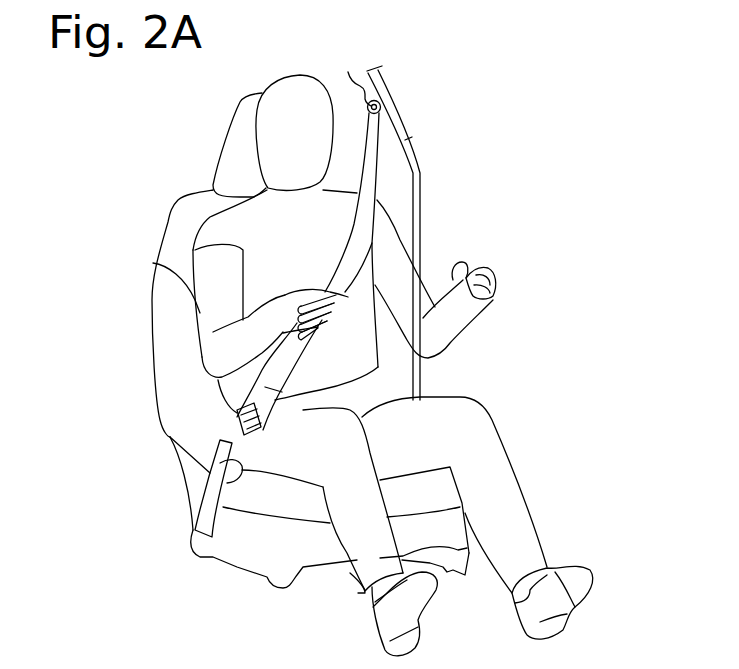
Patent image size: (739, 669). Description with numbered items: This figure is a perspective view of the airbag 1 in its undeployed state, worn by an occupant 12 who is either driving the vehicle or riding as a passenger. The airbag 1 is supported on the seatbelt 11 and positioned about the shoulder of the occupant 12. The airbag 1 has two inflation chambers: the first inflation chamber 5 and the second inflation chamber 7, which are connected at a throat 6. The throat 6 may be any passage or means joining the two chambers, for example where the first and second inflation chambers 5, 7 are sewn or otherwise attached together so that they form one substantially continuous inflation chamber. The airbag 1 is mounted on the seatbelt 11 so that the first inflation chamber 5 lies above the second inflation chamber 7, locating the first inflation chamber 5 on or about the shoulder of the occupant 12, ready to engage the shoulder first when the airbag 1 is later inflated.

The airbag 1 is at (405, 189).
The first inflation chamber 5 is at (365, 244).
The throat 6 is at (325, 292).
The second inflation chamber 7 is at (287, 358).
The seatbelt 11 is at (370, 165).
The occupant 12 is at (257, 227).